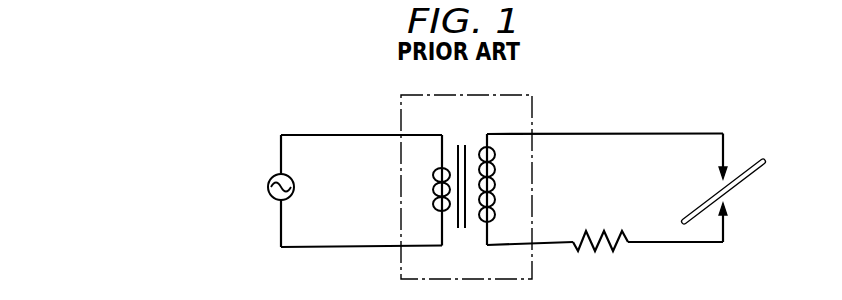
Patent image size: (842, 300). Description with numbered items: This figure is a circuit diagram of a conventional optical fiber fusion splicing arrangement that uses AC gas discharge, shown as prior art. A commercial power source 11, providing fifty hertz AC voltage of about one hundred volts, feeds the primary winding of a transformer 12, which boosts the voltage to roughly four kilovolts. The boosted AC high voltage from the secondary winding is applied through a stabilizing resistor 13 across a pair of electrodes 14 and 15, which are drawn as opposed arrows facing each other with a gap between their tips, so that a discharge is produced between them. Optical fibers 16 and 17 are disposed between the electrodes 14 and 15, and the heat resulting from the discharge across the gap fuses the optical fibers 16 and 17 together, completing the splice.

The commercial power source 11 is at (270, 177).
The transformer 12 is at (455, 94).
The stabilizing resistor 13 is at (590, 246).
The electrode 14 is at (726, 162).
The electrode 15 is at (728, 223).
The optical fiber 16 is at (695, 205).
The optical fiber 17 is at (754, 158).